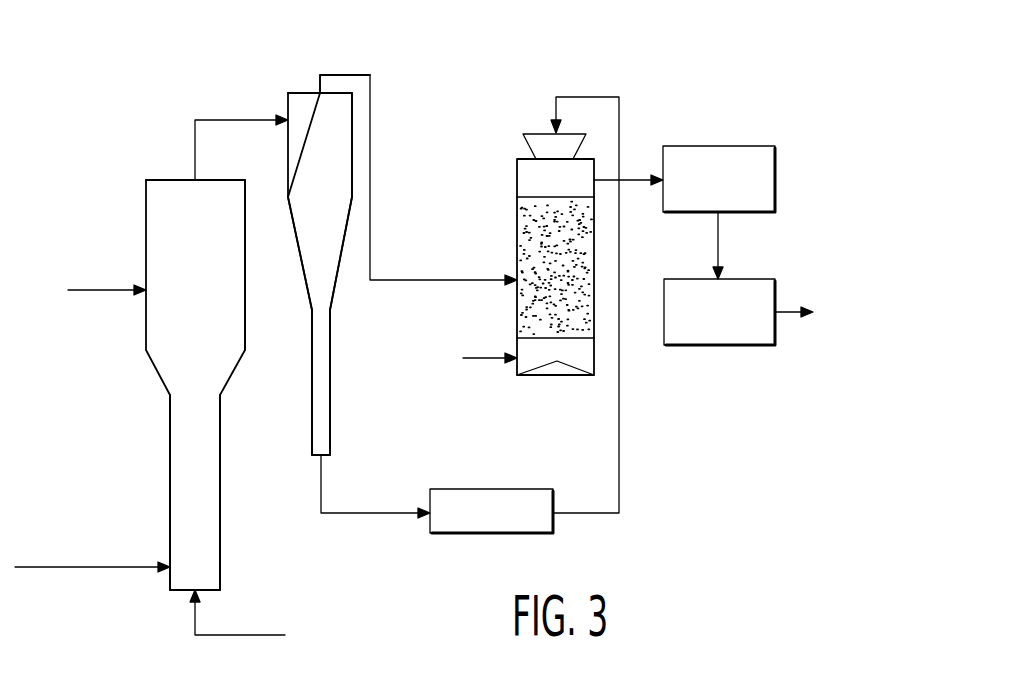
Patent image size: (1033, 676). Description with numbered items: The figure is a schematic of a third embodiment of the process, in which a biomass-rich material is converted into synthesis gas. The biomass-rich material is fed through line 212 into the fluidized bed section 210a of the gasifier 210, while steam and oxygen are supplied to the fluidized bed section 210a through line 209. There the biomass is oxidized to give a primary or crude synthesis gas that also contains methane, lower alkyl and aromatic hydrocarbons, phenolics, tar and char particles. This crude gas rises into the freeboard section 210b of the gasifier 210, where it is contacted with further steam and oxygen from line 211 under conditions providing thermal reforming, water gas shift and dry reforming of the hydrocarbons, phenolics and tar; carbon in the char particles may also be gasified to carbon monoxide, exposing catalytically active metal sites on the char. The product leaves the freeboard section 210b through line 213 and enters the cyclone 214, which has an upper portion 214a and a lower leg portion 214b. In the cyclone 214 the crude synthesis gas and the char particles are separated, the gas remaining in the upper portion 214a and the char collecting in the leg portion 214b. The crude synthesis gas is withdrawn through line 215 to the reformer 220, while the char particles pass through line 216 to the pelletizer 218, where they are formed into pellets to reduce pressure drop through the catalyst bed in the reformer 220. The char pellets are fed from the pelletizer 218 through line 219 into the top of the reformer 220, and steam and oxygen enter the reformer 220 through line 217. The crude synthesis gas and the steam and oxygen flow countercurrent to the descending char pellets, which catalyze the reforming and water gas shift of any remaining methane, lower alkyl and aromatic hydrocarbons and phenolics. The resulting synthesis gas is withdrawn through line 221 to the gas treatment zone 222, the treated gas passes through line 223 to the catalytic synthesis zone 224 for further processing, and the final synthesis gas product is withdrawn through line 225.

The line 209 is at (195, 635).
The gasifier 210 is at (150, 383).
The fluidized bed section 210a is at (178, 486).
The freeboard section 210b is at (146, 197).
The line 211 is at (109, 290).
The line 212 is at (78, 570).
The line 213 is at (212, 118).
The cyclone 214 is at (287, 246).
The upper portion 214a is at (287, 178).
The leg portion 214b is at (312, 392).
The line 215 is at (360, 73).
The line 216 is at (337, 515).
The line 217 is at (494, 360).
The pelletizer 218 is at (535, 489).
The line 219 is at (592, 97).
The reformer 220 is at (517, 252).
The line 221 is at (632, 178).
The gas treatment zone 222 is at (758, 146).
The line 223 is at (719, 238).
The catalytic synthesis zone 224 is at (720, 345).
The line 225 is at (789, 315).